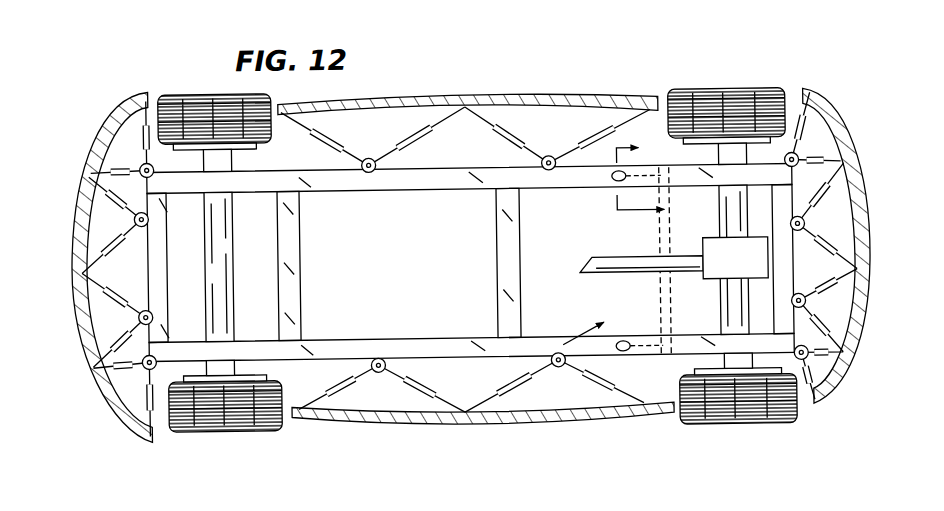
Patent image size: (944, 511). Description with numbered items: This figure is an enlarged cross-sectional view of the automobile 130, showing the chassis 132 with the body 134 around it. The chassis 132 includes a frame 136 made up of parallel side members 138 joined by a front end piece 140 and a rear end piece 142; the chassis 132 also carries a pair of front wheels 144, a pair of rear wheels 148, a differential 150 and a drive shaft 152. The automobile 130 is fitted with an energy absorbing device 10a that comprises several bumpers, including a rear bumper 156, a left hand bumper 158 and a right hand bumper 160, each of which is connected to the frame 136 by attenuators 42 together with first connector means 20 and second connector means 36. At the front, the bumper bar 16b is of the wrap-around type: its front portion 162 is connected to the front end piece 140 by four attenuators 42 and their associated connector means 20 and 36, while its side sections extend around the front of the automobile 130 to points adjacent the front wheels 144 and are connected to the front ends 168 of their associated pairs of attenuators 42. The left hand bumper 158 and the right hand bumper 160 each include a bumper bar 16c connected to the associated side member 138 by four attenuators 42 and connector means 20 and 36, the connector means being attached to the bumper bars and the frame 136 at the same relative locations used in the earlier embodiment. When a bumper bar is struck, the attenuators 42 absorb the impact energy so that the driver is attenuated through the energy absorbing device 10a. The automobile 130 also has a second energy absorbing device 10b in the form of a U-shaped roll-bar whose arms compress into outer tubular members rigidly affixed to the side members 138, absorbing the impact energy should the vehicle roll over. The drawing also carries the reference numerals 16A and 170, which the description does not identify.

The automobile 130 is at (456, 72).
The energy absorbing device 10a is at (598, 79).
The energy absorbing device 10b is at (672, 300).
The bumper bar 16b is at (148, 95).
The bumper bar 16c is at (627, 102).
The bumper end 16A is at (150, 440).
The chassis 132 is at (208, 89).
The front wheels 144 is at (240, 104).
The rear wheels 148 is at (712, 84).
The wheel axle 170 is at (775, 156).
The attenuator 42 is at (135, 163).
The first connector means 20 is at (60, 170).
The second connector means 36 is at (858, 405).
The side members 138 is at (443, 170).
The front end piece 140 is at (165, 278).
The rear end piece 142 is at (785, 308).
The frame 136 is at (296, 423).
The right hand bumper 160 is at (420, 426).
The body 134 is at (520, 426).
The front ends 168 is at (182, 430).
The left hand bumper 158 is at (500, 96).
The differential 150 is at (712, 252).
The drive shaft 152 is at (598, 265).
The rear bumper 156 is at (858, 205).
The front portion 162 is at (856, 285).